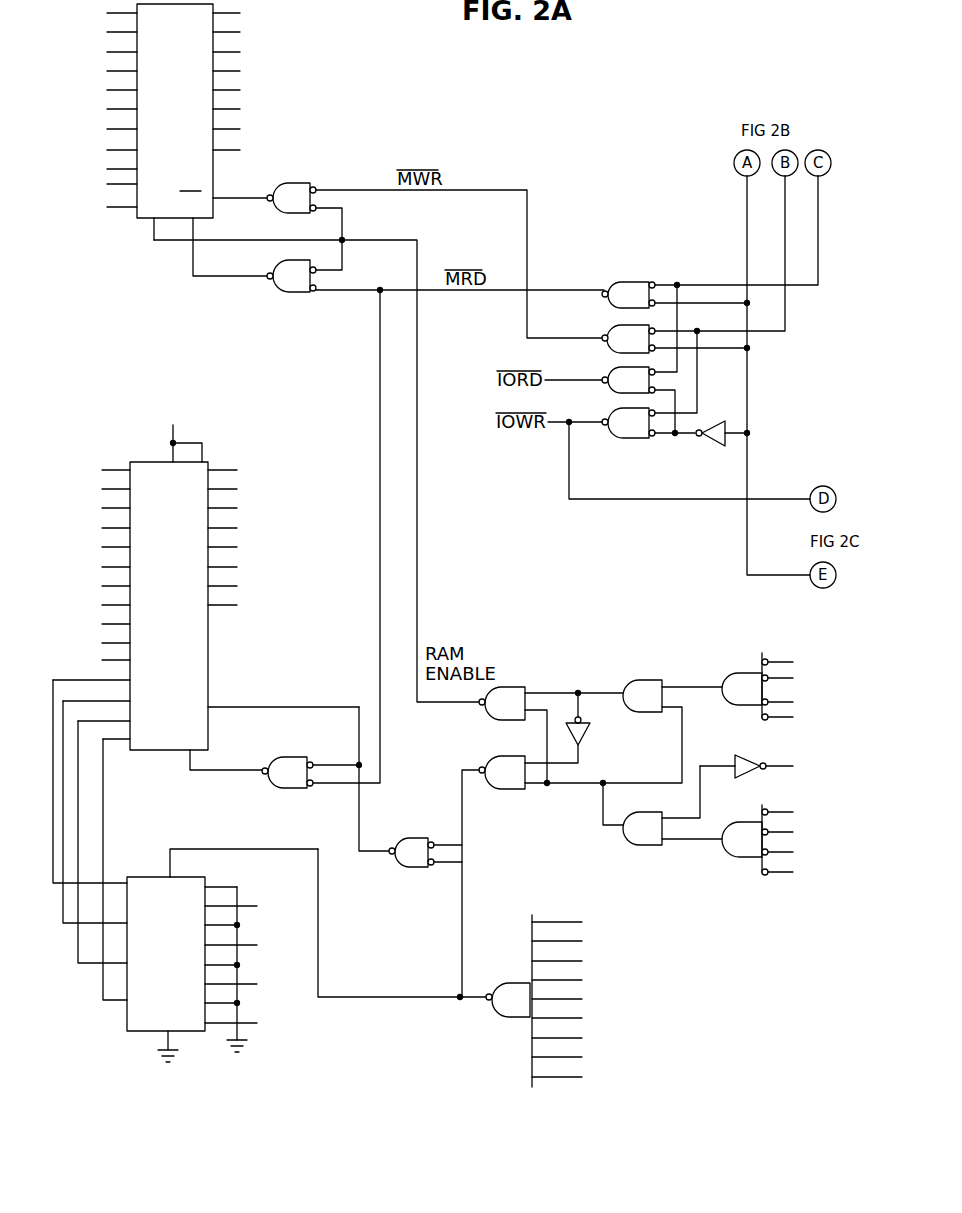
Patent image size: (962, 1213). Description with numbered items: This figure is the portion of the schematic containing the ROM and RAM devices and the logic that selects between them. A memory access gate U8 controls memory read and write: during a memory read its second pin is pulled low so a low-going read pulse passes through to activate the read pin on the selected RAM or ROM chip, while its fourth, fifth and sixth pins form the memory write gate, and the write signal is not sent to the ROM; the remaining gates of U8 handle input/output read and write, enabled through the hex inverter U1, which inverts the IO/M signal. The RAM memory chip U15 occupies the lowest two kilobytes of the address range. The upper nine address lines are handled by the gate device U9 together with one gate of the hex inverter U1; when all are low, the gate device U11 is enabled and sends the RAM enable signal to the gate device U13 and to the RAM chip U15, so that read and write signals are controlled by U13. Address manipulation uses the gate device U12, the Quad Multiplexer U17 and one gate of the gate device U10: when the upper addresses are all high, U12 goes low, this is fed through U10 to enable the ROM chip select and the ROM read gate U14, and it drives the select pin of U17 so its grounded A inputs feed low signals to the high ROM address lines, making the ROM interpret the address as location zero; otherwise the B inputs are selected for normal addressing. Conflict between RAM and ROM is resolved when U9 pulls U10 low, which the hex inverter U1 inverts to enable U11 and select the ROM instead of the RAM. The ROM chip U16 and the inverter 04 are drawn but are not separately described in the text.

The RAM memory chip U15 is at (170, 138).
The 32K ROM 27C256 U16 is at (204, 587).
The Quad Multiplexer U17 is at (185, 871).
The gate device U13 is at (303, 240).
The ROM read gate U14 is at (304, 770).
The memory access gate U8 is at (630, 420).
The inverter 04 is at (715, 440).
The hex inverter U1 is at (748, 758).
The gate device U11 is at (502, 731).
The gate device U10 is at (526, 774).
The gate device U9 is at (774, 762).
The gate device U12 is at (551, 996).